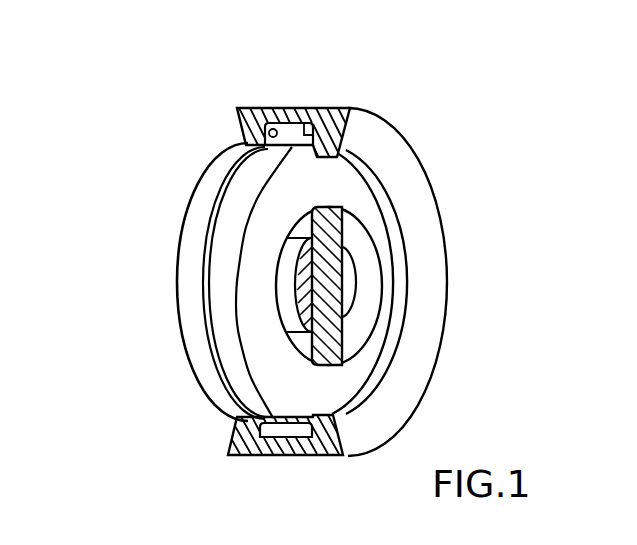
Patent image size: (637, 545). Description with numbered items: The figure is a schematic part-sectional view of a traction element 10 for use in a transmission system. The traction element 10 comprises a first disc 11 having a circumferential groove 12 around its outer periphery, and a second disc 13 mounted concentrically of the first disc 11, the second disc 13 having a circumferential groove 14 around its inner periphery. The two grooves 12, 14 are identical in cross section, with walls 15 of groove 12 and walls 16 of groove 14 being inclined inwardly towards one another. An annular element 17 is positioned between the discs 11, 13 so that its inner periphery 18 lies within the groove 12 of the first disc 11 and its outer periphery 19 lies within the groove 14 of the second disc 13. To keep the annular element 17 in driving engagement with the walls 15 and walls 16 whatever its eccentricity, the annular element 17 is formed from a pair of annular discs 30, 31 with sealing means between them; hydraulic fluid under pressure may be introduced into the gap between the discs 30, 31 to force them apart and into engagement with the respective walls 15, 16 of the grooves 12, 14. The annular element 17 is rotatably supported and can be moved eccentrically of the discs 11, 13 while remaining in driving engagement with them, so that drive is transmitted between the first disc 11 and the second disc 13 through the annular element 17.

The traction element 10 is at (158, 159).
The first disc 11 is at (352, 284).
The circumferential groove 12 is at (303, 228).
The second disc 13 is at (380, 133).
The circumferential groove 14 is at (295, 110).
The walls 15 is at (310, 343).
The walls 16 is at (315, 110).
The annular element 17 is at (178, 272).
The inner periphery 18 is at (273, 293).
The outer periphery 19 is at (187, 225).
The annular disc 30 is at (218, 172).
The annular disc 31 is at (232, 350).